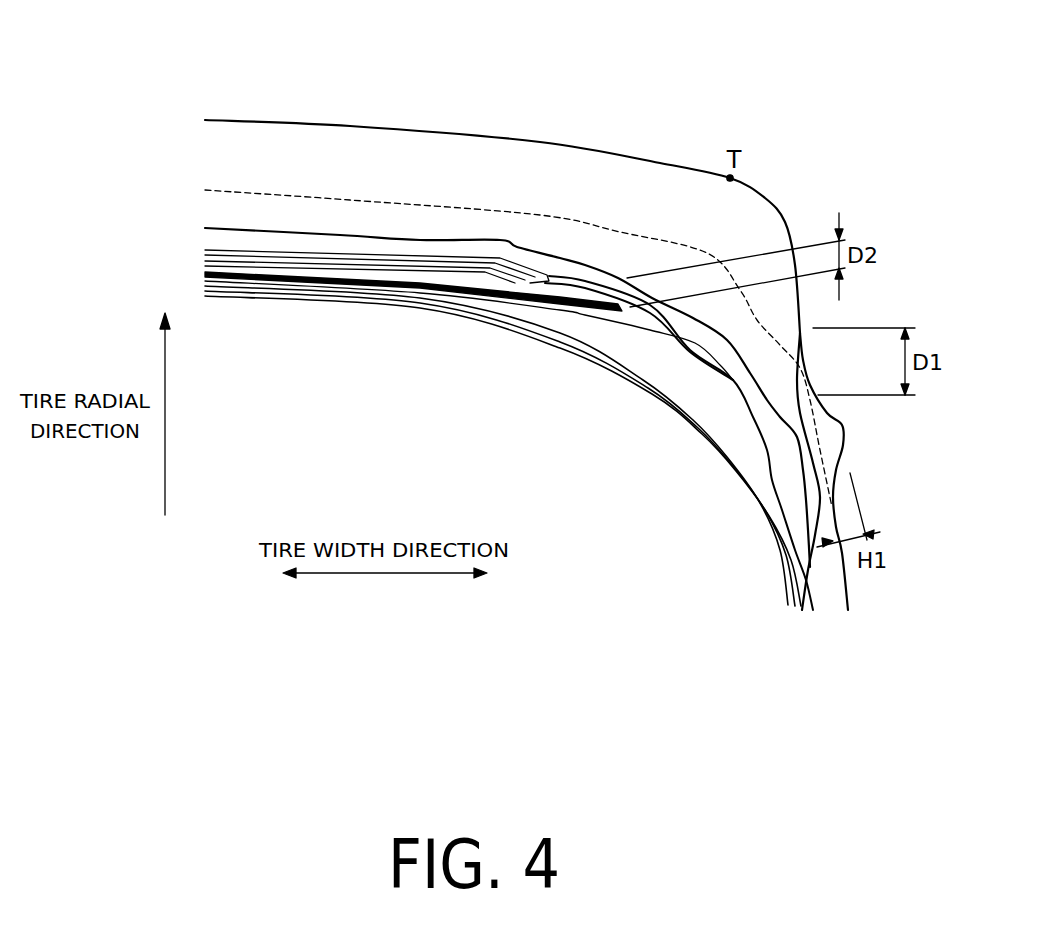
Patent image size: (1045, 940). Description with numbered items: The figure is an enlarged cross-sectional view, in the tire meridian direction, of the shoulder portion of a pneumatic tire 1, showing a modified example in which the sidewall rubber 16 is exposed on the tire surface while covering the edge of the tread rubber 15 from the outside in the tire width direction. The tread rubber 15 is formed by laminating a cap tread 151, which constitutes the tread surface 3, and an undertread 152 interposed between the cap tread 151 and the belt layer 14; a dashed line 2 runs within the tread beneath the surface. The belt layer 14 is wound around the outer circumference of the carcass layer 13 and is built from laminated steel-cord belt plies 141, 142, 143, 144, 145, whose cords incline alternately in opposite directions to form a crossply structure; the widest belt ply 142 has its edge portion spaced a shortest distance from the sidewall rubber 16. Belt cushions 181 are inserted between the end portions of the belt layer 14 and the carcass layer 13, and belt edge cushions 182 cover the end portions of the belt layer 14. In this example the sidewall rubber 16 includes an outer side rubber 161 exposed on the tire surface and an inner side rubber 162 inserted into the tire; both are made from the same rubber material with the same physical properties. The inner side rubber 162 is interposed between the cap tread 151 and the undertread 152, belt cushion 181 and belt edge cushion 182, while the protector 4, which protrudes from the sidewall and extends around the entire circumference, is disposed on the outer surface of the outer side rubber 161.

The pneumatic tire 1 is at (502, 194).
The groove bottom / wear line 2 is at (268, 190).
The tread surface 3 is at (305, 120).
The protector 4 is at (840, 458).
The carcass layer 13 is at (750, 502).
The belt layer 14 is at (469, 348).
The tread rubber 15 is at (507, 298).
The sidewall rubber 16 is at (824, 531).
The belt ply 141 is at (510, 299).
The belt ply 142 is at (300, 397).
The belt ply 143 is at (460, 283).
The belt ply 144 is at (403, 273).
The belt ply 145 is at (347, 266).
The cap tread 151 is at (523, 105).
The undertread 152 is at (430, 238).
The outer side rubber 161 is at (846, 513).
The inner side rubber 162 is at (757, 550).
The belt cushion 181 is at (698, 430).
The belt edge cushion 182 is at (643, 333).